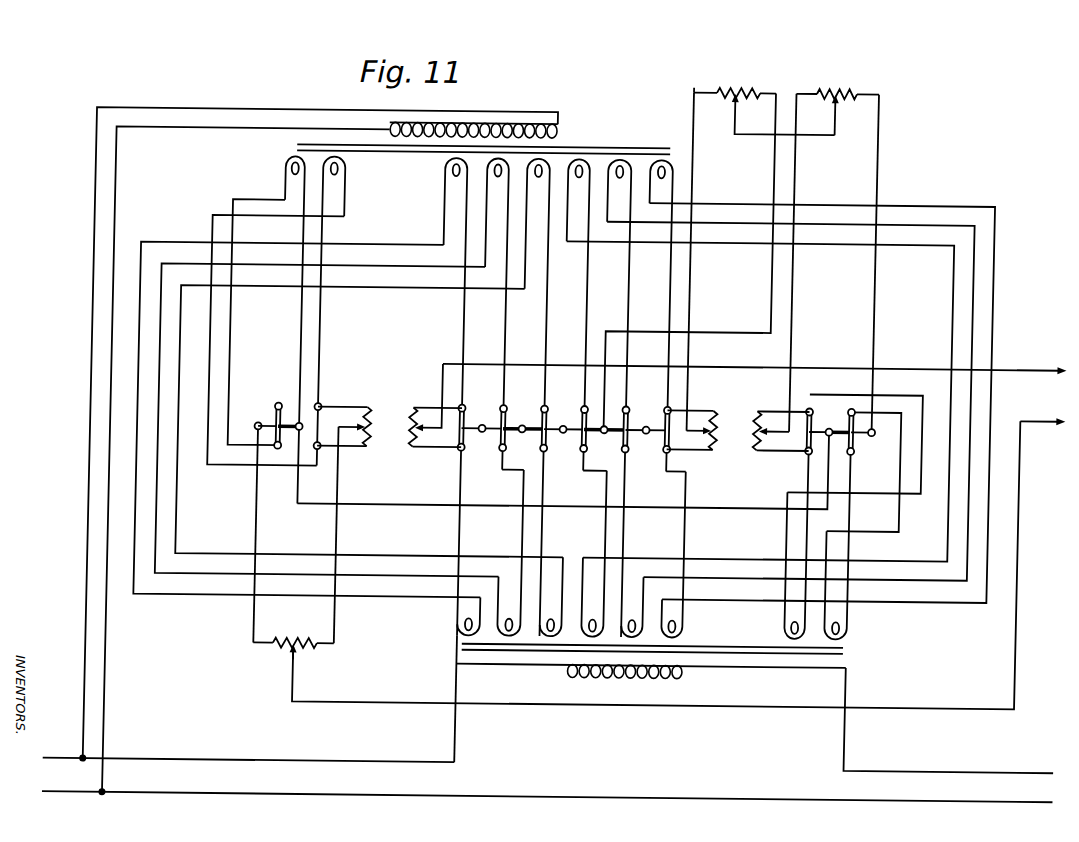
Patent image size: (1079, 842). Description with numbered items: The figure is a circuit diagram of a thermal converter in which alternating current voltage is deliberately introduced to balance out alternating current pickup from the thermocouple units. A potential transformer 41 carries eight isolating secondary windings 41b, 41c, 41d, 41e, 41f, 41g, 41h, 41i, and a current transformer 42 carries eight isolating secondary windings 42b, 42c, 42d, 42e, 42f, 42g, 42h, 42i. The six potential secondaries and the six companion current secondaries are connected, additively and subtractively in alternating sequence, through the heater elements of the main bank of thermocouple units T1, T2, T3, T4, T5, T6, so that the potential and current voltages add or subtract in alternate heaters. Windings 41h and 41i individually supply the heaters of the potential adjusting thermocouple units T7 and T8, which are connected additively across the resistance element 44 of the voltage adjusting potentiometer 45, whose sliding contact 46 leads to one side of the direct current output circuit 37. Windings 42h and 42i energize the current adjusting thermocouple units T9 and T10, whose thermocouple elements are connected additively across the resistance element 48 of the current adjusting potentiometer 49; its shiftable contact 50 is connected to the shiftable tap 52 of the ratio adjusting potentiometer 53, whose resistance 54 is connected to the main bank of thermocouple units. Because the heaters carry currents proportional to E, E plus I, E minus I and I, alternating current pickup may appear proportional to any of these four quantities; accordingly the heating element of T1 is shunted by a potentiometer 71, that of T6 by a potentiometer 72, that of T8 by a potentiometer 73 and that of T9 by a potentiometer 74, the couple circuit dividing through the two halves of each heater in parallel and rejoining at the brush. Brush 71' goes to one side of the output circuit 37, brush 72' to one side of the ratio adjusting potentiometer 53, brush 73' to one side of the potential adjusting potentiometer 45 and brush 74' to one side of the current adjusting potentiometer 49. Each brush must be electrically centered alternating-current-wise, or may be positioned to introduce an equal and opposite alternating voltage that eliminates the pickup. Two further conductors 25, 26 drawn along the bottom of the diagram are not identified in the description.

The supply line 25 is at (248, 771).
The supply line 26 is at (547, 789).
The direct current output circuit 37 is at (754, 392).
The potential transformer 41 is at (566, 136).
The secondary winding 41b is at (451, 396).
The secondary winding 41c is at (495, 313).
The secondary winding 41d is at (533, 397).
The secondary winding 41e is at (576, 314).
The secondary winding 41f is at (614, 398).
The secondary winding 41g is at (658, 315).
The secondary winding 41h is at (291, 329).
The secondary winding 41i is at (331, 311).
The current transformer 42 is at (462, 654).
The secondary winding 42b is at (468, 616).
The secondary winding 42c is at (510, 553).
The secondary winding 42d is at (551, 596).
The secondary winding 42e is at (594, 554).
The secondary winding 42f is at (632, 607).
The secondary winding 42g is at (683, 620).
The secondary winding 42h is at (795, 620).
The secondary winding 42i is at (852, 620).
The resistance element 44 is at (292, 640).
The voltage adjusting potentiometer 45 is at (262, 666).
The sliding contact 46 is at (303, 657).
The resistance element 48 is at (844, 88).
The current adjusting potentiometer 49 is at (821, 78).
The shiftable contact 50 is at (832, 106).
The shiftable tap 52 is at (731, 101).
The ratio adjusting potentiometer 53 is at (700, 76).
The resistance 54 is at (740, 88).
The potentiometer 71 is at (428, 413).
The brush 71' is at (415, 426).
The potentiometer 72 is at (698, 418).
The brush 72' is at (703, 455).
The potentiometer 73 is at (348, 412).
The brush 73' is at (354, 452).
The potentiometer 74 is at (780, 417).
The brush 74' is at (762, 460).
The thermocouple unit T1 is at (466, 435).
The thermocouple unit T2 is at (511, 437).
The thermocouple unit T3 is at (552, 437).
The thermocouple unit T4 is at (593, 438).
The thermocouple unit T5 is at (635, 438).
The thermocouple unit T6 is at (657, 439).
The potential adjusting thermocouple unit T7 is at (259, 414).
The potential adjusting thermocouple unit T8 is at (298, 425).
The current adjusting thermocouple unit T9 is at (813, 440).
The current adjusting thermocouple unit T10 is at (866, 441).